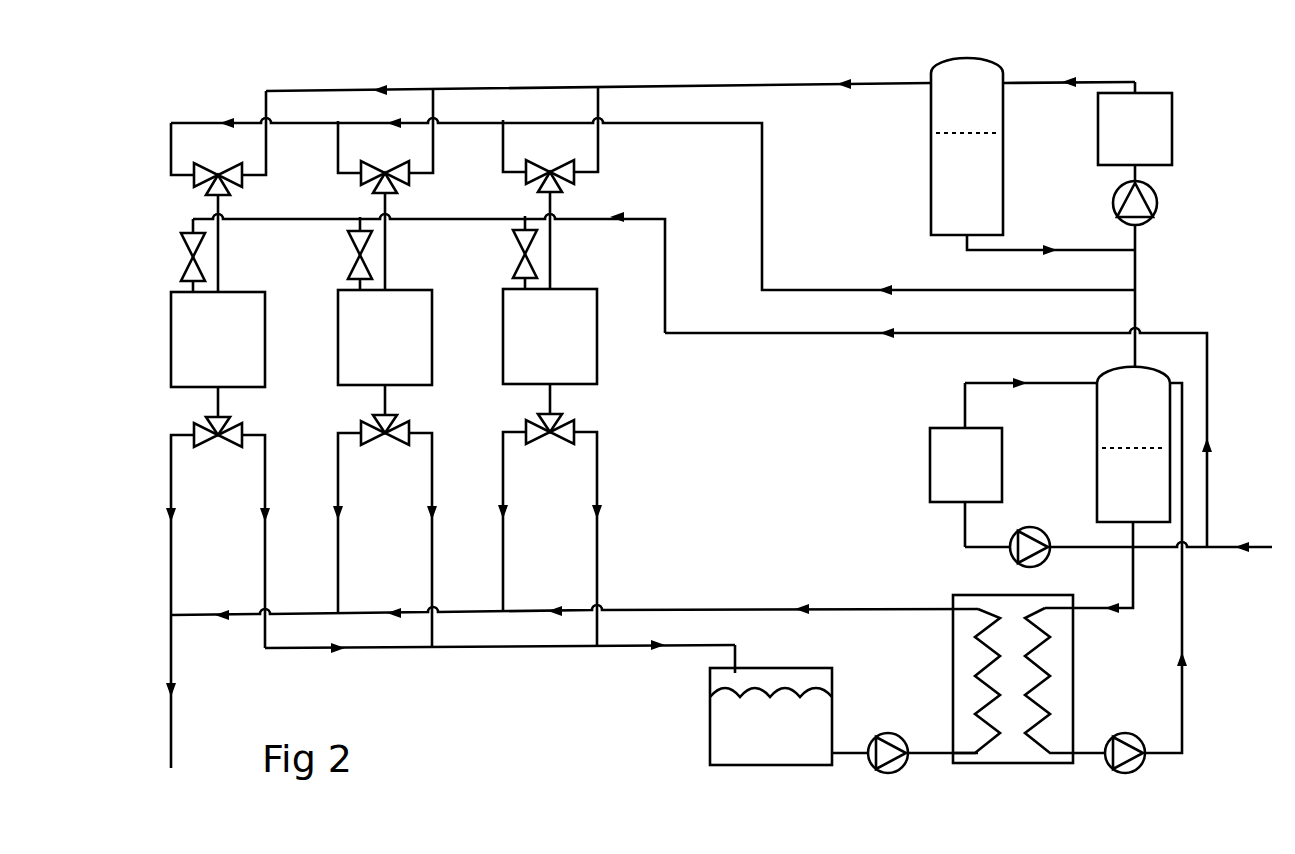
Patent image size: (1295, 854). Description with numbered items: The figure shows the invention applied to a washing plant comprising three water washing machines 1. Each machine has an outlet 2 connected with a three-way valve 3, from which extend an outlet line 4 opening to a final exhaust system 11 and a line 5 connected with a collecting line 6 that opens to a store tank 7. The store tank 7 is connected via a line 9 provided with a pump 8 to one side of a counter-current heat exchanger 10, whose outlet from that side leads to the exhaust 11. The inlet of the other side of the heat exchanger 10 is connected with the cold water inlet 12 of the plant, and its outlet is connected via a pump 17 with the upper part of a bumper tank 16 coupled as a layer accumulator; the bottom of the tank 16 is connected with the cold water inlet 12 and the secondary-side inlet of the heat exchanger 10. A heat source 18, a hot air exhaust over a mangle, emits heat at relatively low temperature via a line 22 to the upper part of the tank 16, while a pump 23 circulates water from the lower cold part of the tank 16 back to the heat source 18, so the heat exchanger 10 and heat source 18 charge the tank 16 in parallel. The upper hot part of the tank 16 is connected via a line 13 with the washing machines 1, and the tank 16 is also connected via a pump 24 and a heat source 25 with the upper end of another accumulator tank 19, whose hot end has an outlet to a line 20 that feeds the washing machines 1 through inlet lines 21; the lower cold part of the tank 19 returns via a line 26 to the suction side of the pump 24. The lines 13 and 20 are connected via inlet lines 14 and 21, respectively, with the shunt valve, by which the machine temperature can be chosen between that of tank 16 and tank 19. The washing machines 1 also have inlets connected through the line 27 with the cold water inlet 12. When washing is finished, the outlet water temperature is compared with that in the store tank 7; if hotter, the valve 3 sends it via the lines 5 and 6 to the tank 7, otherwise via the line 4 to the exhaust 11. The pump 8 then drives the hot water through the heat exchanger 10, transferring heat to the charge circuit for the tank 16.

The water washing machine 1 is at (262, 338).
The outlet 2 is at (218, 402).
The three-way valve 3 is at (236, 441).
The outlet line 4 is at (171, 492).
The line 5 is at (265, 548).
The collecting line 6 is at (522, 648).
The store tank 7 is at (720, 724).
The pump 8 is at (873, 740).
The line 9 is at (930, 752).
The heat exchanger 10 is at (953, 663).
The final exhaust system 11 is at (171, 718).
The cold water inlet 12 is at (1250, 552).
The line 13 is at (703, 123).
The inlet line 14 is at (172, 150).
The bumper tank 16 is at (1105, 422).
The pump 17 is at (1138, 768).
The heat source 18 is at (935, 448).
The accumulator tank 19 is at (993, 180).
The line 20 is at (800, 86).
The inlet line 21 is at (266, 162).
The line 22 is at (276, 223).
The pump 23 is at (1035, 527).
The pump 24 is at (1157, 200).
The heat source 25 is at (1163, 130).
The line 26 is at (1027, 248).
The line 27 is at (793, 334).